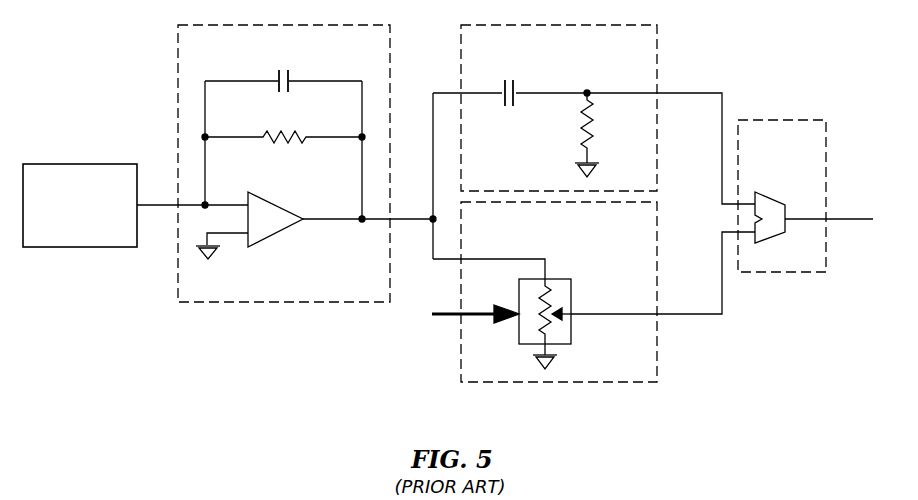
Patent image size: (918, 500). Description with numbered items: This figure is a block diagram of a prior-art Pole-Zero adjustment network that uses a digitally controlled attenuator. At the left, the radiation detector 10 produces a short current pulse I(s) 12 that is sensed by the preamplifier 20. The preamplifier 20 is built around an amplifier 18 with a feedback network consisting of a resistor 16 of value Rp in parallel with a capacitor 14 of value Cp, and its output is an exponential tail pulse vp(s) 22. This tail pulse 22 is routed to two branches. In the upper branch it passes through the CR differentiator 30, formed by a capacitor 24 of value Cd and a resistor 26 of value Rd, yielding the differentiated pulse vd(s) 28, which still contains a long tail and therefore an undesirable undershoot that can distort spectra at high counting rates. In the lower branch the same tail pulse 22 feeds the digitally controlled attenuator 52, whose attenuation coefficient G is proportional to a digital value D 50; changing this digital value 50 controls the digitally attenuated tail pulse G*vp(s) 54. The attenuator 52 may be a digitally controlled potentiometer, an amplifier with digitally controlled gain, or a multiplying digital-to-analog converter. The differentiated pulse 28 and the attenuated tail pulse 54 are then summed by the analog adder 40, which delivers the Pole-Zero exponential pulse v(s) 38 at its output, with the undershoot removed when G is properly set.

The radiation detector 10 is at (96, 248).
The current pulse I(s) 12 is at (155, 178).
The capacitor 14 is at (296, 68).
The resistor 16 is at (302, 123).
The amplifier 18 is at (284, 200).
The preamplifier 20 is at (391, 78).
The exponential tail pulse vp(s) 22 is at (413, 185).
The capacitor 24 is at (500, 104).
The resistor 26 is at (596, 135).
The differentiated pulse vd(s) 28 is at (715, 78).
The CR differentiator 30 is at (657, 56).
The Pole-Zero exponential pulse v(s) 38 is at (848, 195).
The analog adder 40 is at (805, 272).
The digital value D 50 is at (426, 305).
The digitally controlled attenuator 52 is at (657, 344).
The digitally attenuated tail pulse G*vp(s) 54 is at (697, 290).